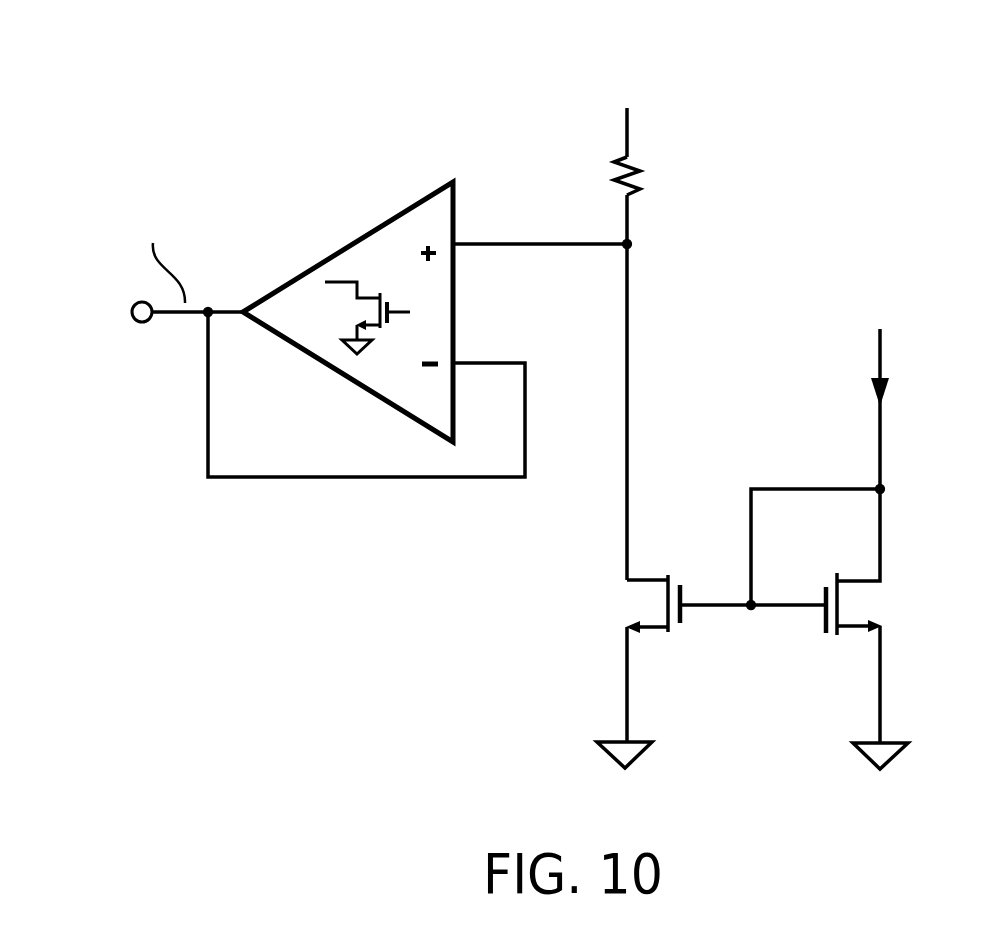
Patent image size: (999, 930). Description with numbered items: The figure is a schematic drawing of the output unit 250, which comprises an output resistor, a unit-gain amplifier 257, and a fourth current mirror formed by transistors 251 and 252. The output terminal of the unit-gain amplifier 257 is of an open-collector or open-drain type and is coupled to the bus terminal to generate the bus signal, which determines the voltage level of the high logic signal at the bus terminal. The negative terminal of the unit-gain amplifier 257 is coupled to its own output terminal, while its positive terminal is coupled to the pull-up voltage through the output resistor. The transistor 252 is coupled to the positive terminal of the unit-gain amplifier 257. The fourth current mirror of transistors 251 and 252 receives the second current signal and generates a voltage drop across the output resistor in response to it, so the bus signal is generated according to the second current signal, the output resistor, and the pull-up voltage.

The output unit 250 is at (961, 85).
The transistor 251 is at (884, 604).
The transistor 252 is at (623, 605).
The unit-gain amplifier 257 is at (348, 232).